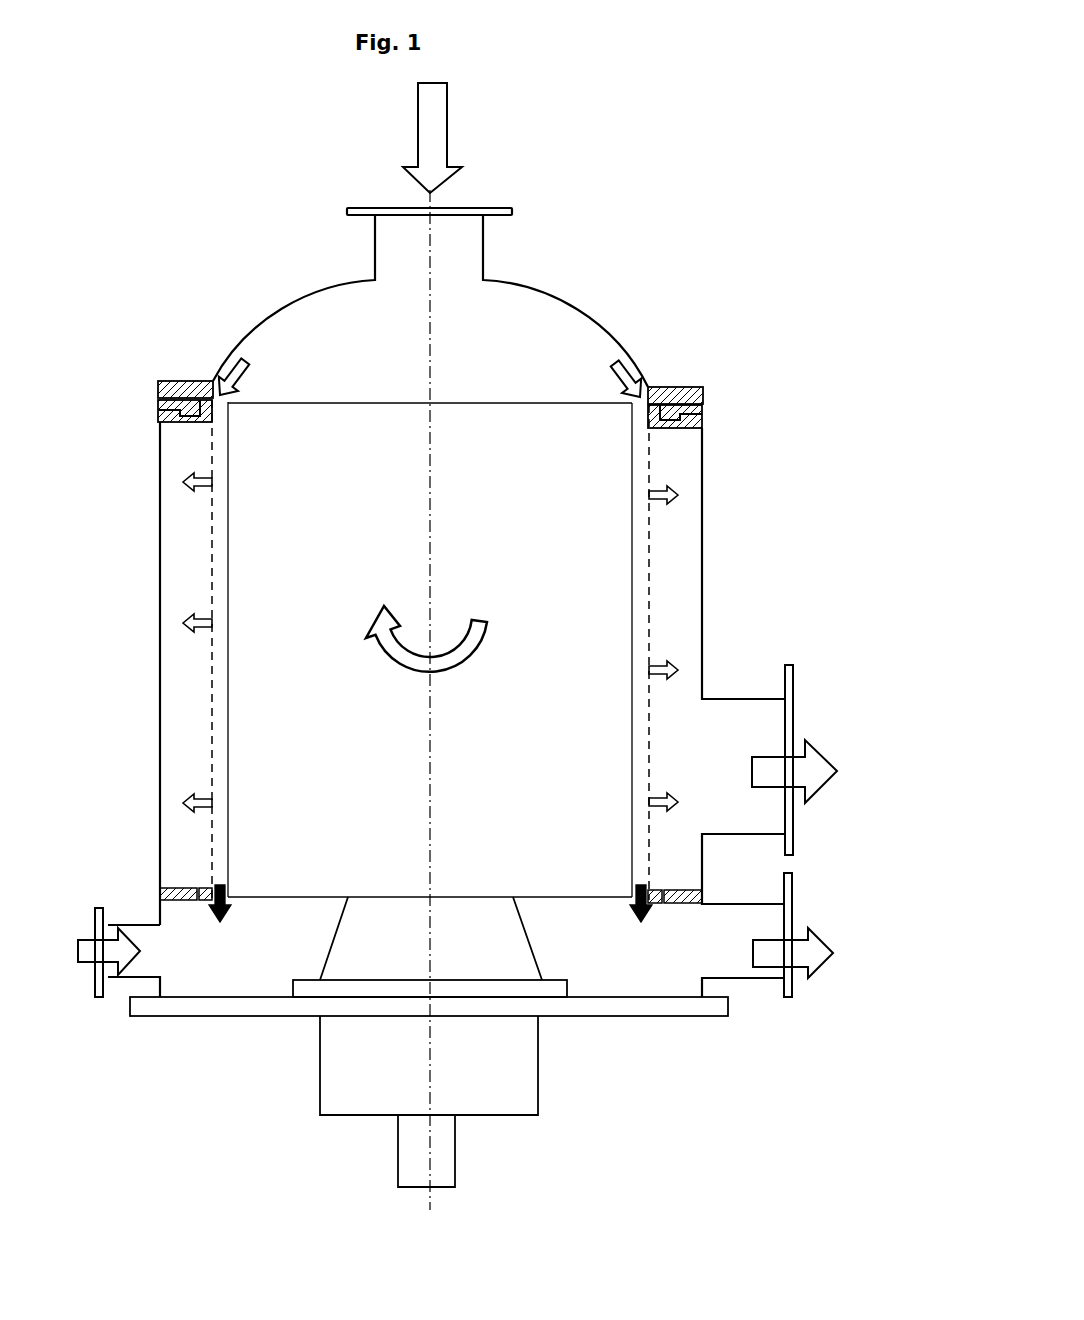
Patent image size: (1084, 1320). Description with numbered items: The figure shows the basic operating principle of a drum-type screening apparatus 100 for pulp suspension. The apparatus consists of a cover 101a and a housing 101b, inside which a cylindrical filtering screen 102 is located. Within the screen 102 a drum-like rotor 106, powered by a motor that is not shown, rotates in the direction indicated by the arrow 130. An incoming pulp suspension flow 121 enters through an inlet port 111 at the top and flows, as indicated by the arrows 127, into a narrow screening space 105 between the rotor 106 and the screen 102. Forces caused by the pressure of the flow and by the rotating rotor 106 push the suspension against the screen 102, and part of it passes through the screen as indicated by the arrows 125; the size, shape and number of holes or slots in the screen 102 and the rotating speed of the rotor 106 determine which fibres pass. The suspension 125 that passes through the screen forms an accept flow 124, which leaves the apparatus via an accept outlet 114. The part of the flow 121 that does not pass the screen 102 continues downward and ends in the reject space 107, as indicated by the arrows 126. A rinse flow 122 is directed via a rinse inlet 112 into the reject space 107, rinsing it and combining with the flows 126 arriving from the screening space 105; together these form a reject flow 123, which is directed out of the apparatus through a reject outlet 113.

The drum-type screening apparatus 100 is at (668, 160).
The cover 101a is at (208, 350).
The housing 101b is at (157, 615).
The cylindrical filtering screen 102 is at (207, 667).
The screening space 105 is at (218, 700).
The rotor 106 is at (430, 453).
The reject space 107 is at (427, 927).
The inlet port 111 is at (455, 218).
The rinse inlet 112 is at (128, 922).
The reject outlet 113 is at (742, 983).
The accept outlet 114 is at (745, 697).
The incoming pulp suspension flow 121 is at (455, 138).
The rinse flow 122 is at (82, 948).
The reject flow 123 is at (835, 948).
The accept flow 124 is at (838, 768).
The pulp suspension flow through the screen 125 is at (212, 482).
The pulp suspension flows to the reject space 126 is at (227, 890).
The flow to the screening space 127 is at (429, 373).
The rotor rotation direction 130 is at (483, 612).